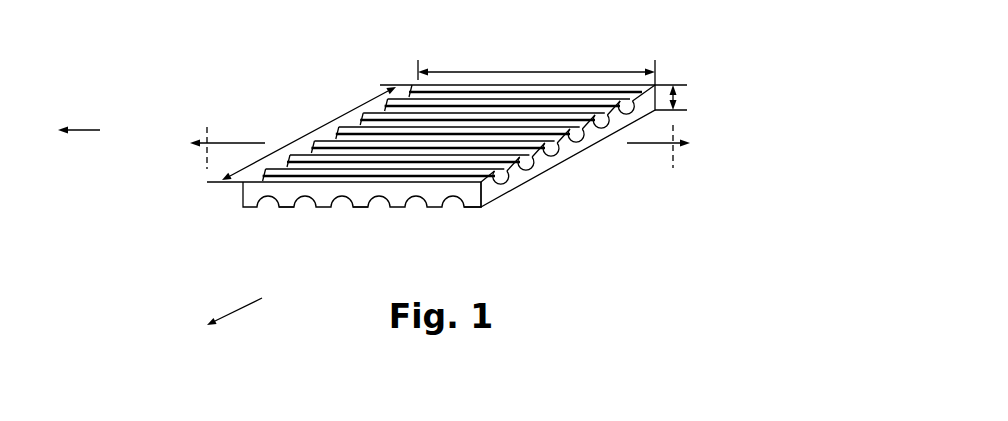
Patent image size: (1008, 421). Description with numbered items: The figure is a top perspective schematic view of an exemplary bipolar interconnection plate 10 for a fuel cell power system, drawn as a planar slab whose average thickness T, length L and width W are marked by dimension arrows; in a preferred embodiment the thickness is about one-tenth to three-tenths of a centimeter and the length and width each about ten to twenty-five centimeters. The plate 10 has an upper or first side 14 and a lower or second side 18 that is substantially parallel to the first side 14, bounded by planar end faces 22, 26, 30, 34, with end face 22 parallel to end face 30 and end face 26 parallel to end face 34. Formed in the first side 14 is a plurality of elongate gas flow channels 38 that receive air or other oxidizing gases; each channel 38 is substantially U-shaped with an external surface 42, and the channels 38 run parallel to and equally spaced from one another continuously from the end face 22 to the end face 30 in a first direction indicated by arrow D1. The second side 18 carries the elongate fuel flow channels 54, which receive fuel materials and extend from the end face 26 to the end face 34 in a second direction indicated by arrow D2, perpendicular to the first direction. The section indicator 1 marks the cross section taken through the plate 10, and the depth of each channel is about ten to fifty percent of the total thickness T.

The bipolar interconnection plate 10 is at (454, 136).
The first side 14 is at (503, 183).
The second side 18 is at (474, 209).
The end face 22 is at (493, 192).
The end face 26 is at (613, 84).
The end face 30 is at (243, 192).
The end face 34 is at (290, 197).
The gas flow channel 38 is at (552, 150).
The external surface 42 is at (532, 162).
The fuel flow channel 54 is at (343, 207).
The section line 1- 1 is at (439, 147).
The length L is at (532, 70).
The width W is at (323, 125).
The thickness T is at (677, 104).
The first direction D1 is at (103, 128).
The second direction D2 is at (240, 308).